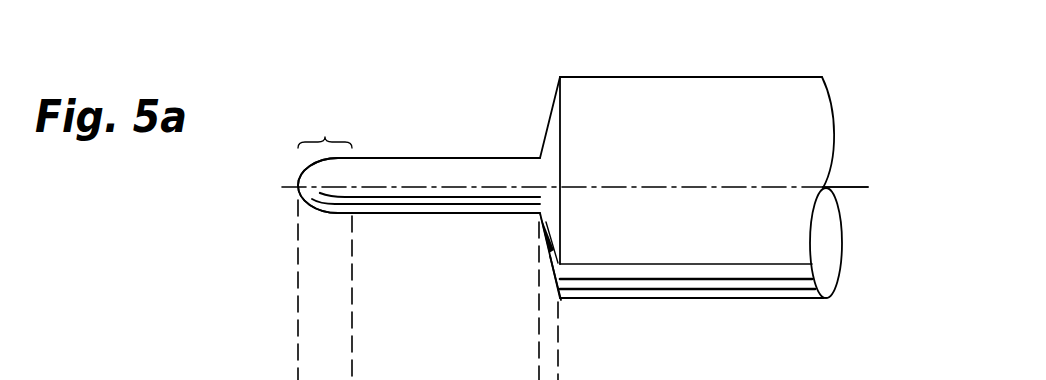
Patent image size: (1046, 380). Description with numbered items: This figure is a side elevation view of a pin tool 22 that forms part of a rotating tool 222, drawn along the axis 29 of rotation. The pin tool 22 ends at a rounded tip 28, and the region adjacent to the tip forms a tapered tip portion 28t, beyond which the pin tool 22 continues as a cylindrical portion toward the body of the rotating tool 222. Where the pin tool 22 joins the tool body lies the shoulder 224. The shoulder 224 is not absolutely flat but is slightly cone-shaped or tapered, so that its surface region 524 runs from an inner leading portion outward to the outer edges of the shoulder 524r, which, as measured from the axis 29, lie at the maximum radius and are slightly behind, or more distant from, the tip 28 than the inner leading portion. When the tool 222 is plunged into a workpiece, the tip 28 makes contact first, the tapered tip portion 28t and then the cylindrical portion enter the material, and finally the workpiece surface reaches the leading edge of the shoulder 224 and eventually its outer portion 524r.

The pin tool 22 is at (412, 158).
The tip 28 is at (299, 177).
The tapered tip portion 28t is at (325, 126).
The shoulder 224 is at (553, 103).
The rotating tool 222 is at (732, 45).
The shoulder portion 524 is at (540, 214).
The outer edges of the shoulder 524r is at (561, 299).
The axis of rotation 29 is at (868, 188).